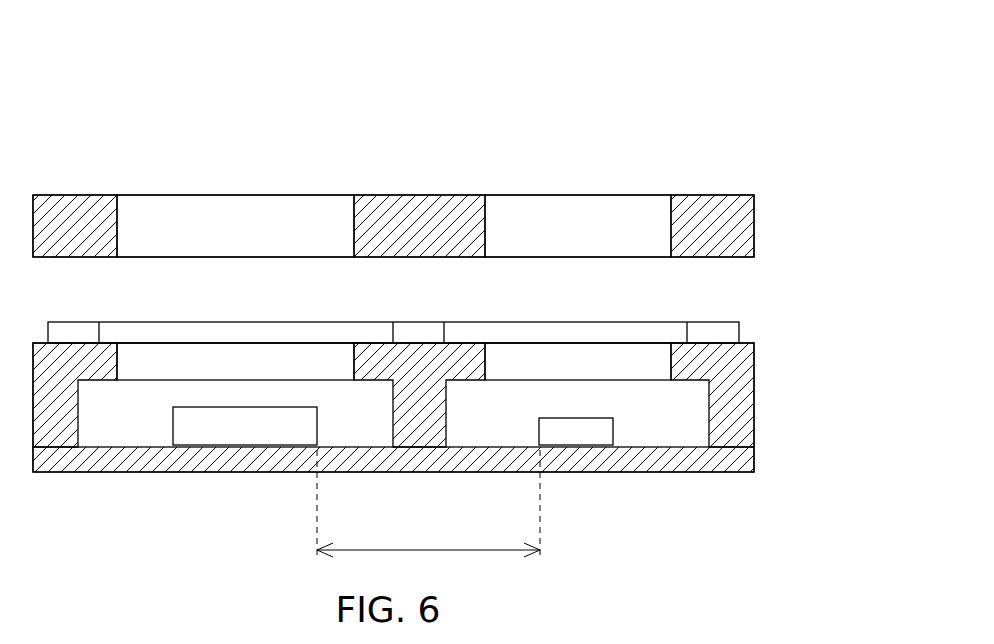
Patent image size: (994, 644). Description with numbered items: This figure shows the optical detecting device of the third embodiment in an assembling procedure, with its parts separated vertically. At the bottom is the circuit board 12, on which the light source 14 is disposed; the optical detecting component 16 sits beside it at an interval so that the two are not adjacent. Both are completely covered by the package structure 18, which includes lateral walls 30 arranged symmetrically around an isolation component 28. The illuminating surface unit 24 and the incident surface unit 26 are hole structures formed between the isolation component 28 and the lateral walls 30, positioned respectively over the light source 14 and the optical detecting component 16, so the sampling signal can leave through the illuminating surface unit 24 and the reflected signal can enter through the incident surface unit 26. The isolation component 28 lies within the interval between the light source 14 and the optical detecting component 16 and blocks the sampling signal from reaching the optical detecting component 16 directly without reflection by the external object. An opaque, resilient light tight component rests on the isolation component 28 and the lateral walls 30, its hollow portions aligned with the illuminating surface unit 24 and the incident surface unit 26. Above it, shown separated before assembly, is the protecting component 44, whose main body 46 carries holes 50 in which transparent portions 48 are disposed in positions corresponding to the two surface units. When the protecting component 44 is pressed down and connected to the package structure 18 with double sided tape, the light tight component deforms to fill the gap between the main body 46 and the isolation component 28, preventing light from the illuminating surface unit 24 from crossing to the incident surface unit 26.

The circuit board 12 is at (146, 460).
The light source 14 is at (582, 432).
The optical detecting component 16 is at (242, 433).
The package structure 18 is at (392, 401).
The illuminating surface unit 24 is at (585, 360).
The incident surface unit 26 is at (231, 362).
The isolation component 28 is at (420, 410).
The lateral wall 30 is at (53, 410).
The protecting component 44 is at (393, 174).
The main body 46 is at (395, 210).
The transparent portion 48 is at (311, 210).
The hole 50 is at (117, 195).